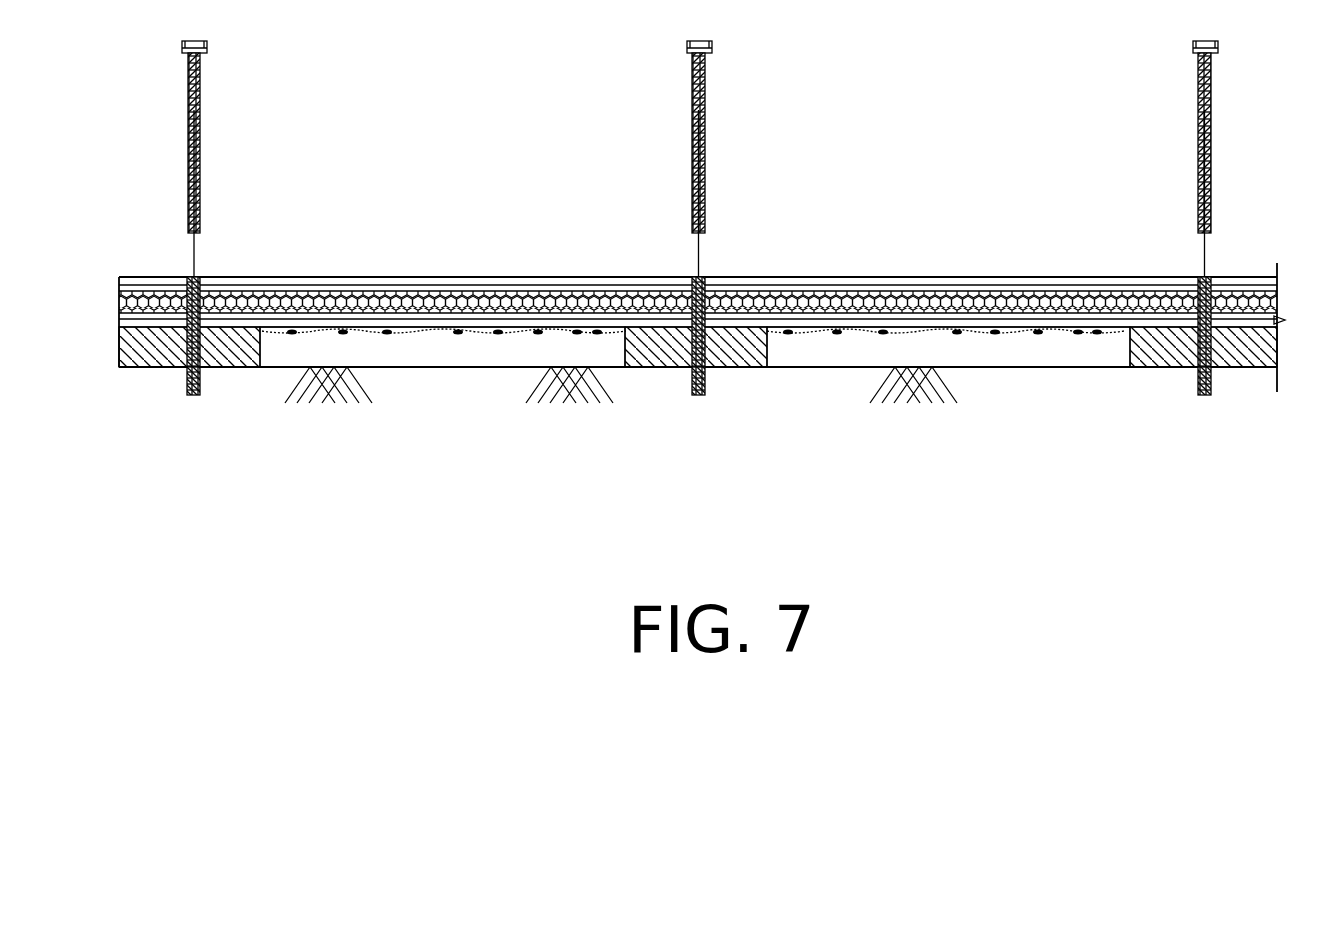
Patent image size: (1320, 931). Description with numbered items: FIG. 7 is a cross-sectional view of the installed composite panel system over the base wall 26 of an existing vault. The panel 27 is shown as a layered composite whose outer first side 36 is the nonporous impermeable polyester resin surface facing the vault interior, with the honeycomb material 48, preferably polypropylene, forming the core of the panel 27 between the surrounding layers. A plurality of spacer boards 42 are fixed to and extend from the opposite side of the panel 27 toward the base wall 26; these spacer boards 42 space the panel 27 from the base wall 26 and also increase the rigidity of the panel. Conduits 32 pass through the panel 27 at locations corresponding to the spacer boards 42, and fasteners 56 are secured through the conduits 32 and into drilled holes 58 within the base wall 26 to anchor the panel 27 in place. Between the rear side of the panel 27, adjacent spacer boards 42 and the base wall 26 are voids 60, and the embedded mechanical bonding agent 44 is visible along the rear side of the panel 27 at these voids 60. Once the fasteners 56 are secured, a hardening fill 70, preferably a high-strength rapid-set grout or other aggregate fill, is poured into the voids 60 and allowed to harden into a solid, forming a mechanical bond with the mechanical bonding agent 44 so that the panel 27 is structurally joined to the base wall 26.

The base wall 26 is at (412, 426).
The panel 27 is at (372, 270).
The conduit 32 is at (205, 283).
The first side 36 is at (139, 270).
The spacer board 42 is at (227, 369).
The mechanical bonding agent 44 is at (391, 333).
The honeycomb material 48 is at (567, 287).
The fastener 56 is at (186, 102).
The drilled hole 58 is at (185, 386).
The void 60 is at (458, 357).
The hardening fill 70 is at (499, 357).